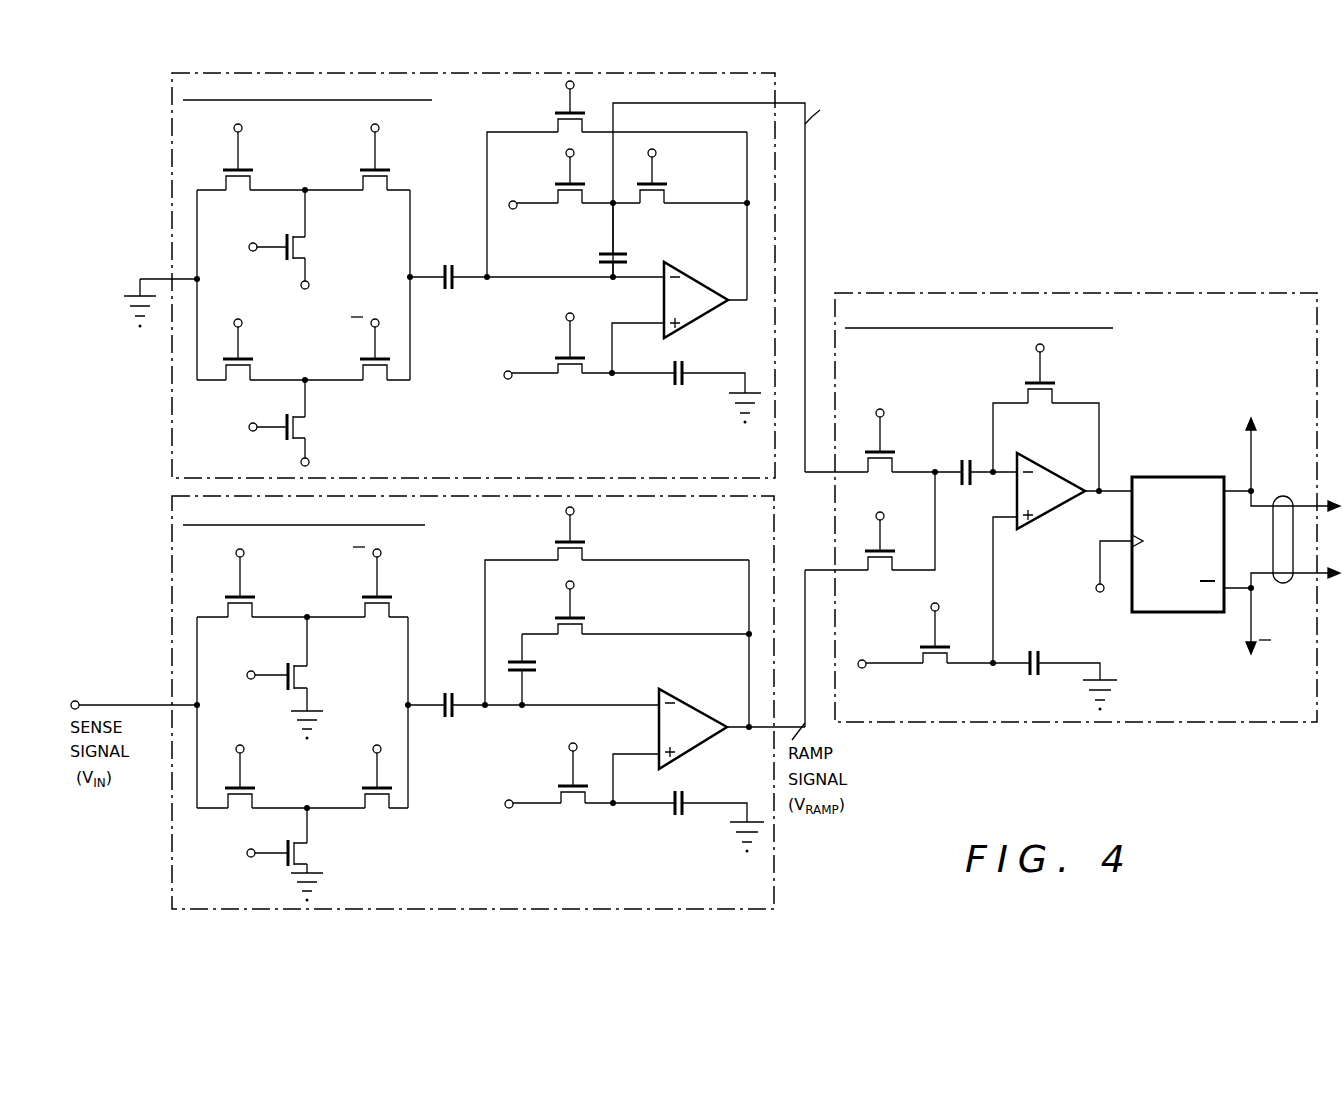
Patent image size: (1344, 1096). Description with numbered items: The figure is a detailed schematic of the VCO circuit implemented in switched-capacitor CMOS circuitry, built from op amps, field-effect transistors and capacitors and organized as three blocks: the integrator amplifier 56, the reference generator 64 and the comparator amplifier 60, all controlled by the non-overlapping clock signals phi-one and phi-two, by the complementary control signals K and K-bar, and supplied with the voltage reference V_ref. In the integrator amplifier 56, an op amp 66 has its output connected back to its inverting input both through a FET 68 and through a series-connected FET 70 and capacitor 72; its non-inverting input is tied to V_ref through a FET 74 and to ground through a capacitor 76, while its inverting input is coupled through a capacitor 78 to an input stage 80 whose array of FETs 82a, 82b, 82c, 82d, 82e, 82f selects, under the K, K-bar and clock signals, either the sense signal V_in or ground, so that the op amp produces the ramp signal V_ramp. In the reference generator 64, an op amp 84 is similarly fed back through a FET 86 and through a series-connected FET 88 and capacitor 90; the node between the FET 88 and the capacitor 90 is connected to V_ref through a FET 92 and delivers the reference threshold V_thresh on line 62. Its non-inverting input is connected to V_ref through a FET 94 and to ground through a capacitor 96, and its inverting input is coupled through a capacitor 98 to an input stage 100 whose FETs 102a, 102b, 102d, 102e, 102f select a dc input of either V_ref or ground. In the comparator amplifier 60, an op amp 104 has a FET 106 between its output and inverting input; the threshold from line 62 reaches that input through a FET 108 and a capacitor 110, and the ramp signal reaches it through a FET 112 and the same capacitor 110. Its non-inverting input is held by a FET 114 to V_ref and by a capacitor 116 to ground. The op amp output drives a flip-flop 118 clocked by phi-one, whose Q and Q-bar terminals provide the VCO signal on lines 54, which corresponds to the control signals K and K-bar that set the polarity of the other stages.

The line 54 is at (1283, 491).
The integrator amplifier 56 is at (172, 545).
The comparator amplifier 60 is at (1250, 293).
The line 62 is at (805, 226).
The reference generator 64 is at (172, 118).
The op amp 66 is at (696, 714).
The FET 68 is at (584, 562).
The FET 70 is at (584, 639).
The capacitor 72 is at (530, 675).
The FET 74 is at (585, 807).
The capacitor 76 is at (686, 804).
The capacitor 78 is at (441, 700).
The input stage 80 is at (329, 724).
The FET 82a is at (251, 621).
The FET 82b is at (307, 669).
The FET 82c is at (388, 621).
The FET 82d is at (249, 812).
The FET 82e is at (307, 847).
The FET 82f is at (387, 811).
The op amp 84 is at (694, 284).
The FET 86 is at (557, 133).
The FET 88 is at (664, 206).
The capacitor 90 is at (606, 258).
The FET 92 is at (582, 206).
The FET 94 is at (582, 377).
The capacitor 96 is at (685, 374).
The capacitor 98 is at (441, 269).
The input stage 100 is at (322, 298).
The FET 102a is at (250, 194).
The FET 102b is at (306, 238).
The FET 102d is at (238, 382).
The FET 102e is at (306, 411).
The FET 102f is at (388, 382).
The op amp 104 is at (1071, 472).
The FET 106 is at (1051, 406).
The FET 108 is at (896, 479).
The capacitor 110 is at (949, 466).
The FET 112 is at (896, 578).
The FET 114 is at (950, 668).
The capacitor 116 is at (1041, 660).
The flip-flop 118 is at (1170, 477).